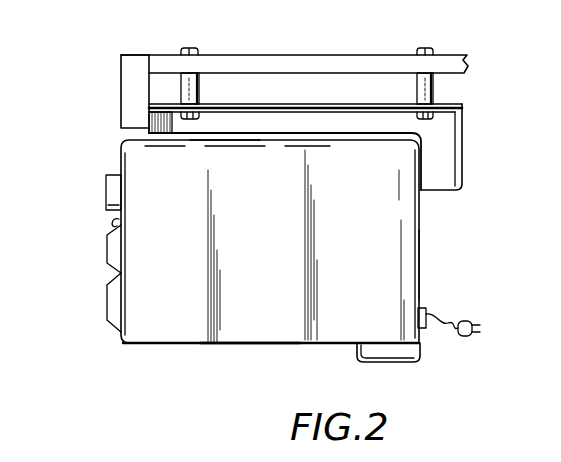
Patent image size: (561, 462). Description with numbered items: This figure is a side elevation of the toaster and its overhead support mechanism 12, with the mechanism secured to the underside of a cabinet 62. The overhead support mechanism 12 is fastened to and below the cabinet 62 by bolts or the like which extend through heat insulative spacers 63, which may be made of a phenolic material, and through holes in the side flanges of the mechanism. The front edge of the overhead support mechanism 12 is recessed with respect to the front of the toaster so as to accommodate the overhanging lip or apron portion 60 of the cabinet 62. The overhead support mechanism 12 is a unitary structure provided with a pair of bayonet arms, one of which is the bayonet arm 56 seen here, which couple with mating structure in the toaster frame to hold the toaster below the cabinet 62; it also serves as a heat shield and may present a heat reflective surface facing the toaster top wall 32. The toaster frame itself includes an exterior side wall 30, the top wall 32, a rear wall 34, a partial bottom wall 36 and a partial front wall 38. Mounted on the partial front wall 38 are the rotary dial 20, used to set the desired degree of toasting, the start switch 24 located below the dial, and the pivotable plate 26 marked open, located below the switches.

The overhead support mechanism 12 is at (345, 118).
The rotary dial 20 is at (109, 195).
The start switch 24 is at (110, 252).
The pivotable plate 26 is at (110, 303).
The exterior side wall 30 is at (404, 295).
The top wall 32 is at (224, 140).
The rear wall 34 is at (420, 250).
The partial bottom wall 36 is at (248, 346).
The partial front wall 38 is at (118, 222).
The bayonet arm 56 is at (440, 176).
The overhanging lip or apron portion 60 is at (131, 90).
The cabinet 62 is at (303, 56).
The heat insulative spacer 63 is at (203, 78).